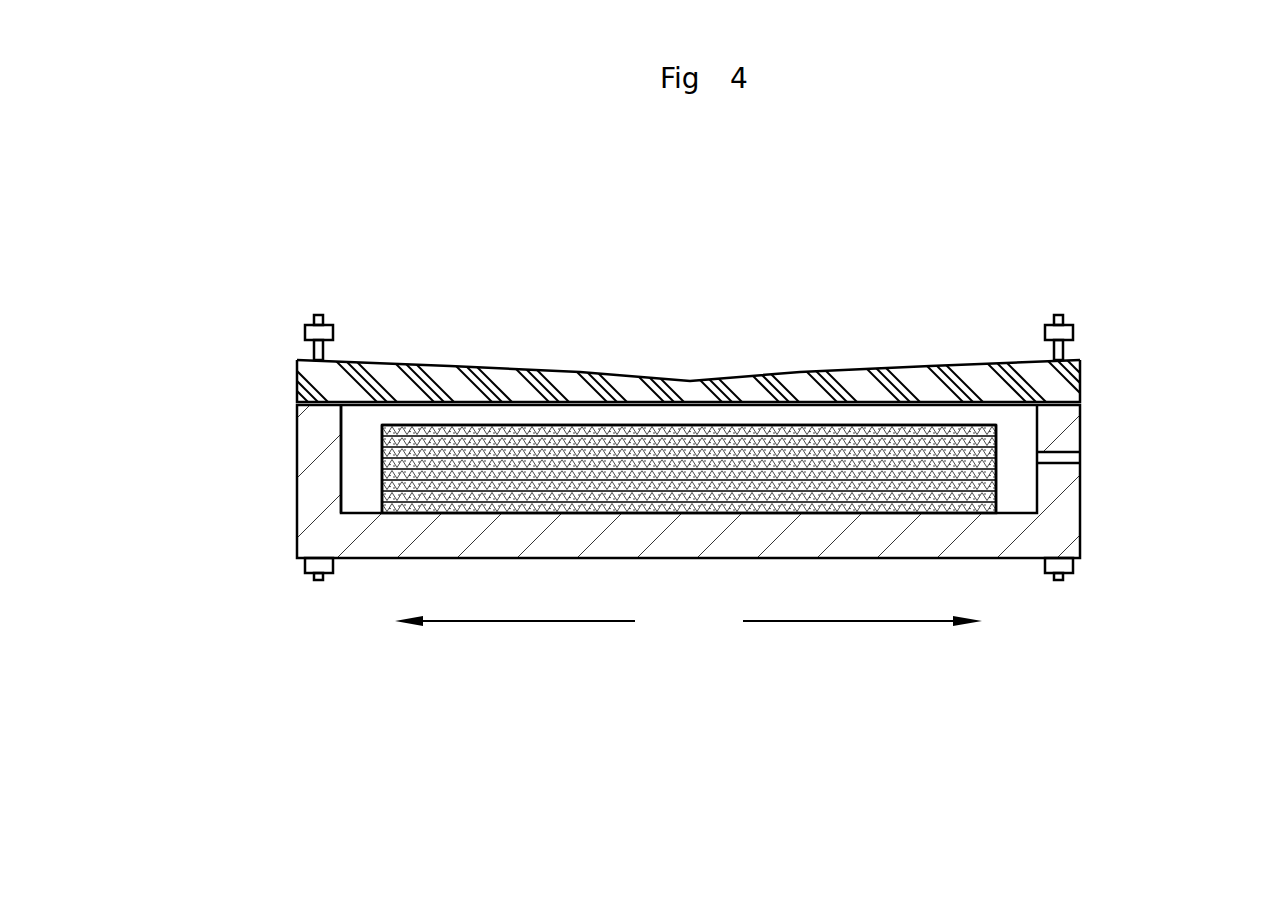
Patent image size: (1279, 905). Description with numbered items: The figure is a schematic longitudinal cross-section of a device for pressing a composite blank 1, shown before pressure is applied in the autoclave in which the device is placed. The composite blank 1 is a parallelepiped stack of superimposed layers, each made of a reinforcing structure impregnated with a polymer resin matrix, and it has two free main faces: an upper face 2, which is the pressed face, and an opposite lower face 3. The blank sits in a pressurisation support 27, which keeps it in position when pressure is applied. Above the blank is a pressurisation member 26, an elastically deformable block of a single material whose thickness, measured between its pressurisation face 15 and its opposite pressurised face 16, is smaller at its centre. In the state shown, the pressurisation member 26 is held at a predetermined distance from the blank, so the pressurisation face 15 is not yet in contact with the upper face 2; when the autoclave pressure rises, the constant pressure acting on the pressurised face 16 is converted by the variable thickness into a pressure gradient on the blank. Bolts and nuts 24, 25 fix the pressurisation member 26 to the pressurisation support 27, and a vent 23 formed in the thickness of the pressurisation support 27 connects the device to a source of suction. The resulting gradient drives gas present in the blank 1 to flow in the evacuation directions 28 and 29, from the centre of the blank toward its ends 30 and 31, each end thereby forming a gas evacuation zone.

The composite blank 1 is at (688, 457).
The upper face 2 is at (485, 425).
The lower face 3 is at (683, 529).
The pressurisation face 15 is at (385, 409).
The pressurised face 16 is at (688, 321).
The vent 23 is at (1103, 455).
The bolt and nut 24 is at (278, 328).
The bolt and nut 25 is at (1100, 330).
The pressurisation member 26 is at (998, 352).
The pressurisation support 27 is at (313, 440).
The evacuation direction 28 is at (512, 621).
The evacuation direction 29 is at (863, 621).
The end of the composite blank 30 is at (360, 463).
The end of the composite blank 31 is at (1020, 490).